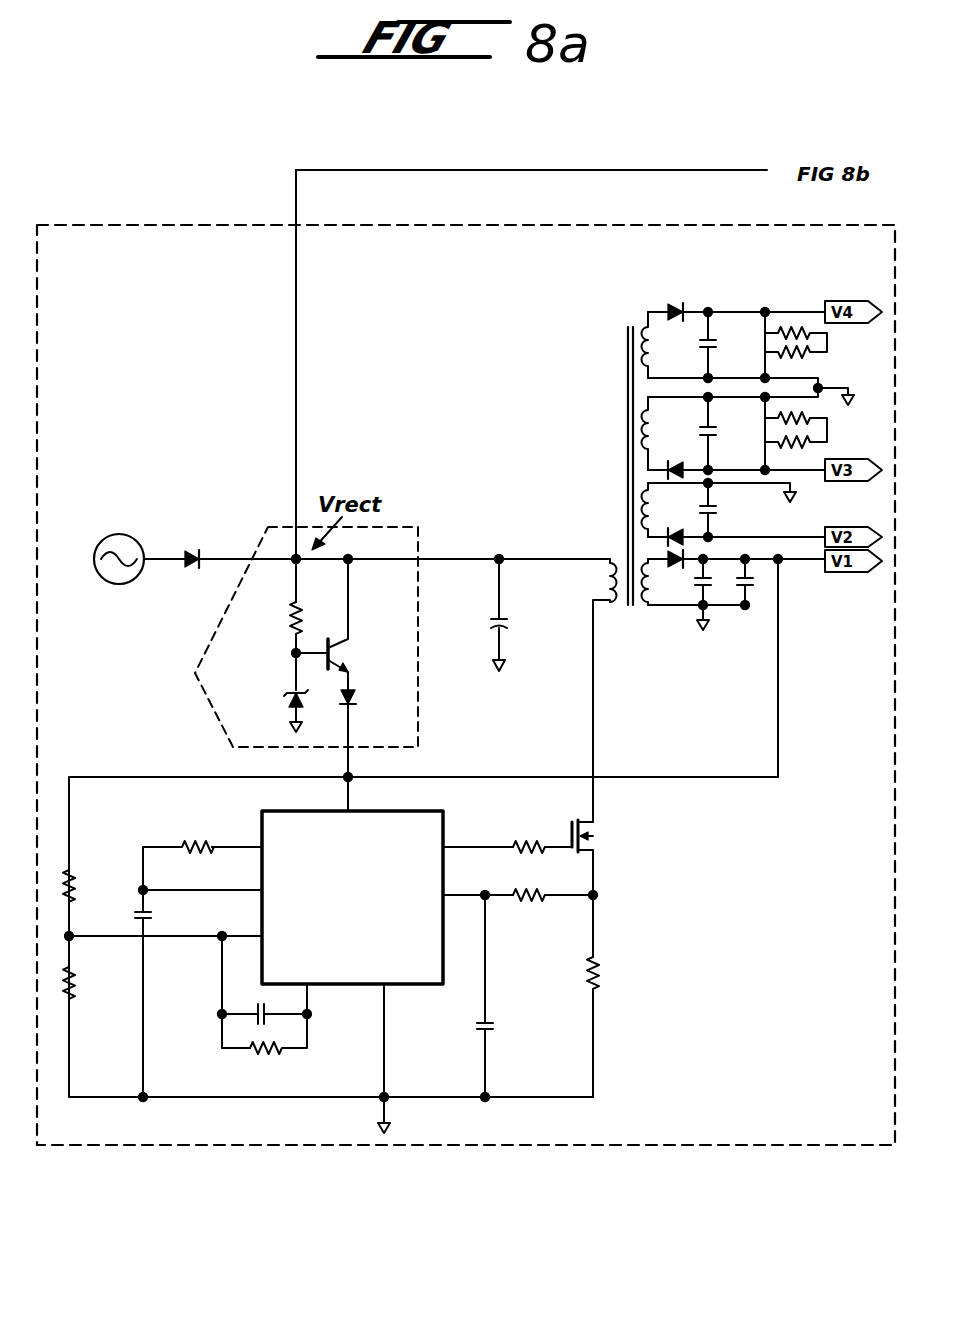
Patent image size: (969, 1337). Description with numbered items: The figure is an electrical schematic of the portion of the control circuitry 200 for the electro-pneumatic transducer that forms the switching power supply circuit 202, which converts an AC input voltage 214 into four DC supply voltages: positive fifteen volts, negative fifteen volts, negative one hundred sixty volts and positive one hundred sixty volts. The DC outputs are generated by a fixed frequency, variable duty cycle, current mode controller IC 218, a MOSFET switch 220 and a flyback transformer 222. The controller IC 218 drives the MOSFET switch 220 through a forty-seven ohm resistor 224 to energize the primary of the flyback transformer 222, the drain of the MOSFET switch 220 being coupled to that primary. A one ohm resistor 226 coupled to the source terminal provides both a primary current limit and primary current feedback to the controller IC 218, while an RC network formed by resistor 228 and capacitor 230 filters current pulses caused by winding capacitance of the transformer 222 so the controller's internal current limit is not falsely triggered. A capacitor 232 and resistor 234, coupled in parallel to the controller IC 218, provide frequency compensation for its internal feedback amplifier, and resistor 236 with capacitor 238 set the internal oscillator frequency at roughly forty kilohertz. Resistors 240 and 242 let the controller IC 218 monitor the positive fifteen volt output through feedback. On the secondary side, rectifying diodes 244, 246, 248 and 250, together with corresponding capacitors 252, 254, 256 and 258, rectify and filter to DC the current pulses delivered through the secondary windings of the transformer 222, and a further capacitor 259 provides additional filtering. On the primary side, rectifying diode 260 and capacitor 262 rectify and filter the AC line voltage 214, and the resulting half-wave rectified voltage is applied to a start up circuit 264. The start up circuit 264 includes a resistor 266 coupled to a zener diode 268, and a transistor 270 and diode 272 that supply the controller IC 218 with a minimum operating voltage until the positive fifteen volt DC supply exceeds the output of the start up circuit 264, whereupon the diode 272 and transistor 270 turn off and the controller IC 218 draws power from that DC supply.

The control circuitry 200 is at (244, 209).
The switching power supply circuit 202 is at (528, 225).
The AC input voltage 214 is at (130, 538).
The current mode controller integrated circuit 218 is at (422, 986).
The MOSFET switch 220 is at (590, 838).
The flyback transformer 222 is at (627, 411).
The 47 ohm resistor 224 is at (528, 842).
The 1 ohm resistor 226 is at (598, 964).
The 1.43K ohm resistor 228 is at (527, 899).
The 0.001 microfarad capacitor 230 is at (494, 1025).
The 22 nanofarad capacitor 232 is at (252, 1019).
The 560K ohm resistor 234 is at (260, 1052).
The 22.1K ohm resistor 236 is at (186, 836).
The 0.001 microfarad capacitor 238 is at (136, 911).
The 49.9K ohm resistor 240 is at (72, 872).
The 10K ohm resistor 242 is at (74, 995).
The rectifying diode 244 is at (684, 295).
The rectifying diode 246 is at (675, 466).
The rectifying diode 248 is at (675, 533).
The rectifying diode 250 is at (676, 567).
The 0.01 microfarad capacitor 252 is at (700, 342).
The 0.01 microfarad capacitor 254 is at (716, 438).
The 22 microfarad capacitor 256 is at (716, 510).
The 22 microfarad capacitor 258 is at (714, 588).
The 22 microfarad capacitor 259 is at (755, 586).
The rectifying diode 260 is at (191, 551).
The 22 microfarad capacitor 262 is at (510, 620).
The start up circuit 264 is at (421, 514).
The resistor 266 is at (292, 620).
The zener diode 268 is at (292, 706).
The transistor 270 is at (352, 647).
The diode 272 is at (356, 701).